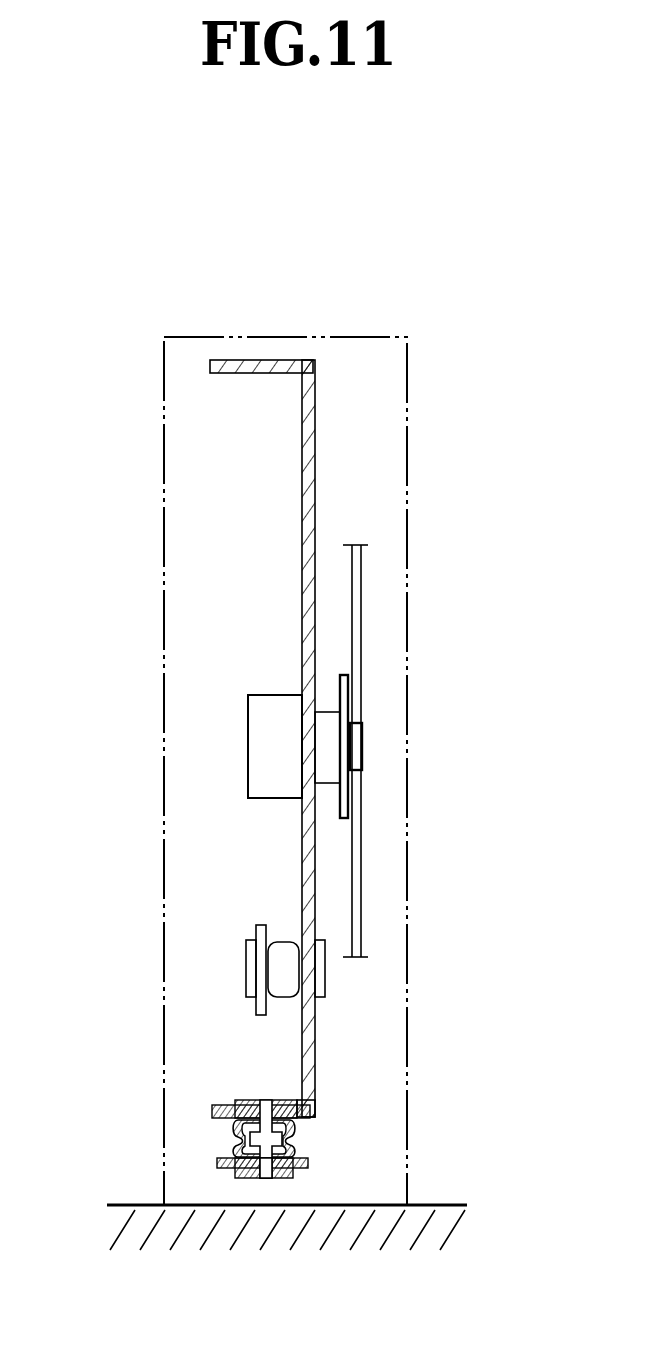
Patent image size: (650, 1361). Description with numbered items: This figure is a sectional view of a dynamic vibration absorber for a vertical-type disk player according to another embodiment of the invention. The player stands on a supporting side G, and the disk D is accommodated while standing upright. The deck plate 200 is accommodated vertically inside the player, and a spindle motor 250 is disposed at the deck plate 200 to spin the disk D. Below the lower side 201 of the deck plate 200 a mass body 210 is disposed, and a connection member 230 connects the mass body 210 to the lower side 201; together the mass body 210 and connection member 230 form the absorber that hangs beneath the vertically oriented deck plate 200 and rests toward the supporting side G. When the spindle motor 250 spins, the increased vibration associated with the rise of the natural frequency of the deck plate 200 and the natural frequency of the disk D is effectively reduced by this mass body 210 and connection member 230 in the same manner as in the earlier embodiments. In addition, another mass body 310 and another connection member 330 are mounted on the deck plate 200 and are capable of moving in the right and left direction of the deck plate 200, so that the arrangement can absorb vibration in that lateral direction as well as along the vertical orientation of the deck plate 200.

The deck plate 200 is at (258, 352).
The spindle motor 250 is at (259, 754).
The disk D is at (355, 650).
The another connection member 330 is at (252, 940).
The another mass body 310 is at (262, 1006).
The lower side 201 is at (218, 1112).
The mass body 210 is at (218, 1162).
The connection member 230 is at (281, 1178).
The supporting side G is at (441, 1218).